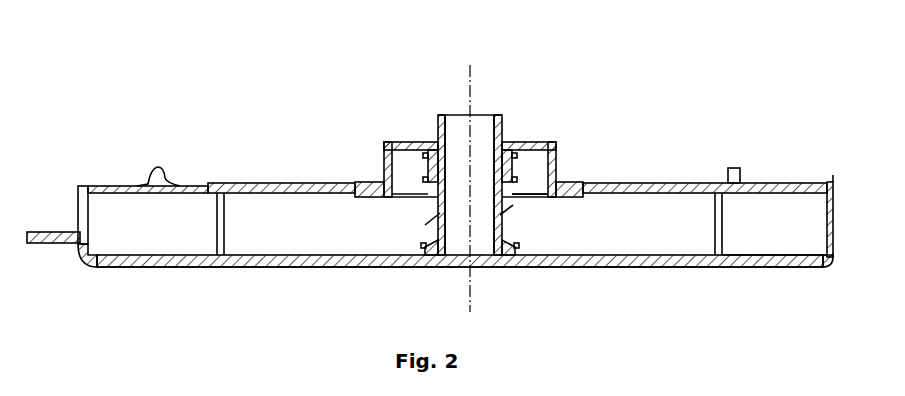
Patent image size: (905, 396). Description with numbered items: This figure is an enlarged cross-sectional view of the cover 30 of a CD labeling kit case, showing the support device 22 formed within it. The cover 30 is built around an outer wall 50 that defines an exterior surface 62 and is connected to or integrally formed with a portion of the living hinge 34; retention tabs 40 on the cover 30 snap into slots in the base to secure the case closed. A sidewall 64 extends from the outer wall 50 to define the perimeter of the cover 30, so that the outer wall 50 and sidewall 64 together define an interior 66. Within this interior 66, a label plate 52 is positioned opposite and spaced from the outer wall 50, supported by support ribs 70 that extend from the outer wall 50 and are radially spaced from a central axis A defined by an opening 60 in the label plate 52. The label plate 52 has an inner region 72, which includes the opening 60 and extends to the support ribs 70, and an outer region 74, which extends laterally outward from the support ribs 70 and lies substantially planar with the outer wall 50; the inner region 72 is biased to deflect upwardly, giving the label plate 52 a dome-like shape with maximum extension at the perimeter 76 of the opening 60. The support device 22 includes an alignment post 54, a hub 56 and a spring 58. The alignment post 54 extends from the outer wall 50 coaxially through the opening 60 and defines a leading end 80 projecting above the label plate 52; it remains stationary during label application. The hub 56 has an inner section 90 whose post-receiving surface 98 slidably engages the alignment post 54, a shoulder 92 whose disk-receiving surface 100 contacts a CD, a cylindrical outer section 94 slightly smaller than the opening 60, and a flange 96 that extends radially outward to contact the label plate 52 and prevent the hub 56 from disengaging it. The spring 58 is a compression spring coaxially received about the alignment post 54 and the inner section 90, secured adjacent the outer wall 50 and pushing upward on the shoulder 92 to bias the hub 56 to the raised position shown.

The central axis A is at (470, 80).
The support device 22 is at (448, 172).
The cover 30 is at (88, 260).
The hinge 34 is at (47, 232).
The retention tabs 40 is at (833, 175).
The outer wall 50 is at (672, 270).
The label plate 52 is at (151, 181).
The alignment post 54 is at (490, 228).
The hub 56 is at (535, 160).
The spring 58 is at (415, 228).
The opening 60 is at (354, 182).
The exterior surface 62 is at (218, 268).
The sidewall 64 is at (836, 237).
The interior 66 is at (780, 233).
The support ribs 70 is at (225, 225).
The inner region 72 is at (637, 183).
The outer region 74 is at (776, 182).
The perimeter 76 is at (567, 182).
The leading end 80 is at (440, 117).
The inner section 90 is at (454, 152).
The shoulder 92 is at (402, 142).
The outer section 94 is at (383, 158).
The flange 96 is at (383, 197).
The post-receiving surface 98 is at (489, 152).
The disk-receiving surface 100 is at (533, 142).